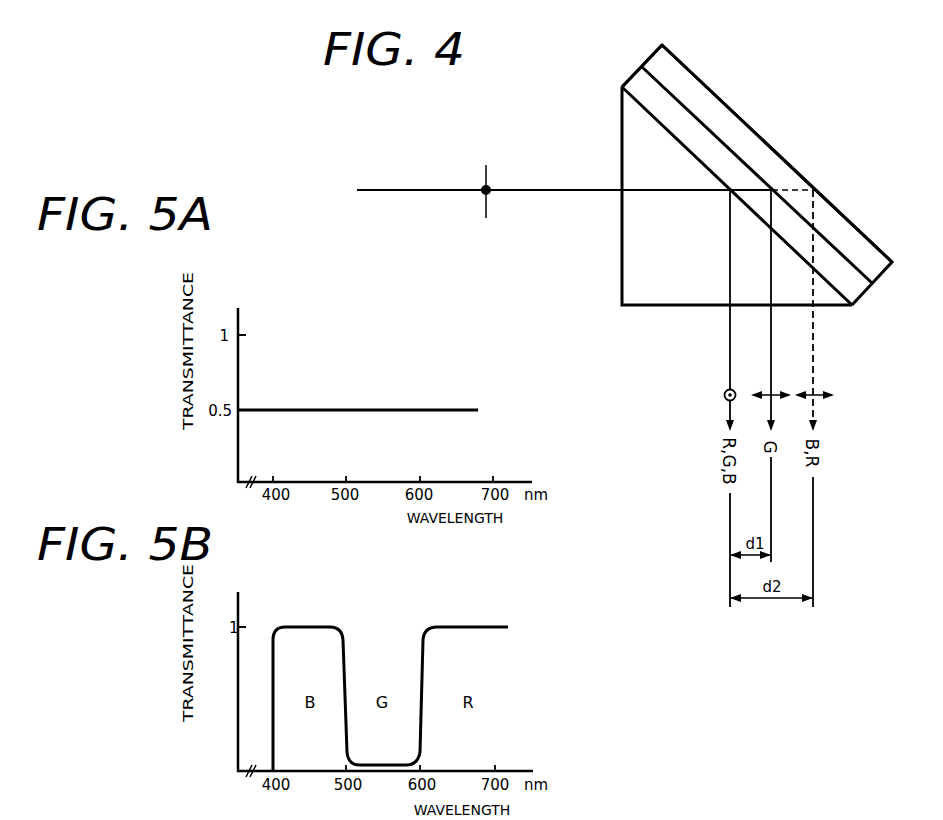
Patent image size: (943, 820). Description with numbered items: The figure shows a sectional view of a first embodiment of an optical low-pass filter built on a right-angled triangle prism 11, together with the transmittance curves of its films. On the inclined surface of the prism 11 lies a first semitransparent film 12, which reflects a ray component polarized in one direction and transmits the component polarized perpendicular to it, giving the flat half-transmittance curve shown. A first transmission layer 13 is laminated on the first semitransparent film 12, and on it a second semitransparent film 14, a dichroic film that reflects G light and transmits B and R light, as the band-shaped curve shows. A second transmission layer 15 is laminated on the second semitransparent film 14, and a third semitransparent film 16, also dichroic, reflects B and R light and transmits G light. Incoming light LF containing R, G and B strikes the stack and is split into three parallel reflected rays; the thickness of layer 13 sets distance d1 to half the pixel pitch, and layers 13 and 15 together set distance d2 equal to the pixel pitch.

The right-angled triangle prism 11 is at (650, 297).
The first semitransparent film 12 is at (645, 115).
The first transmission layer 13 is at (631, 80).
The second semitransparent film 14 is at (707, 127).
The second transmission layer 15 is at (658, 57).
The third semitransparent film 16 is at (768, 146).
The light flux LF is at (822, 176).